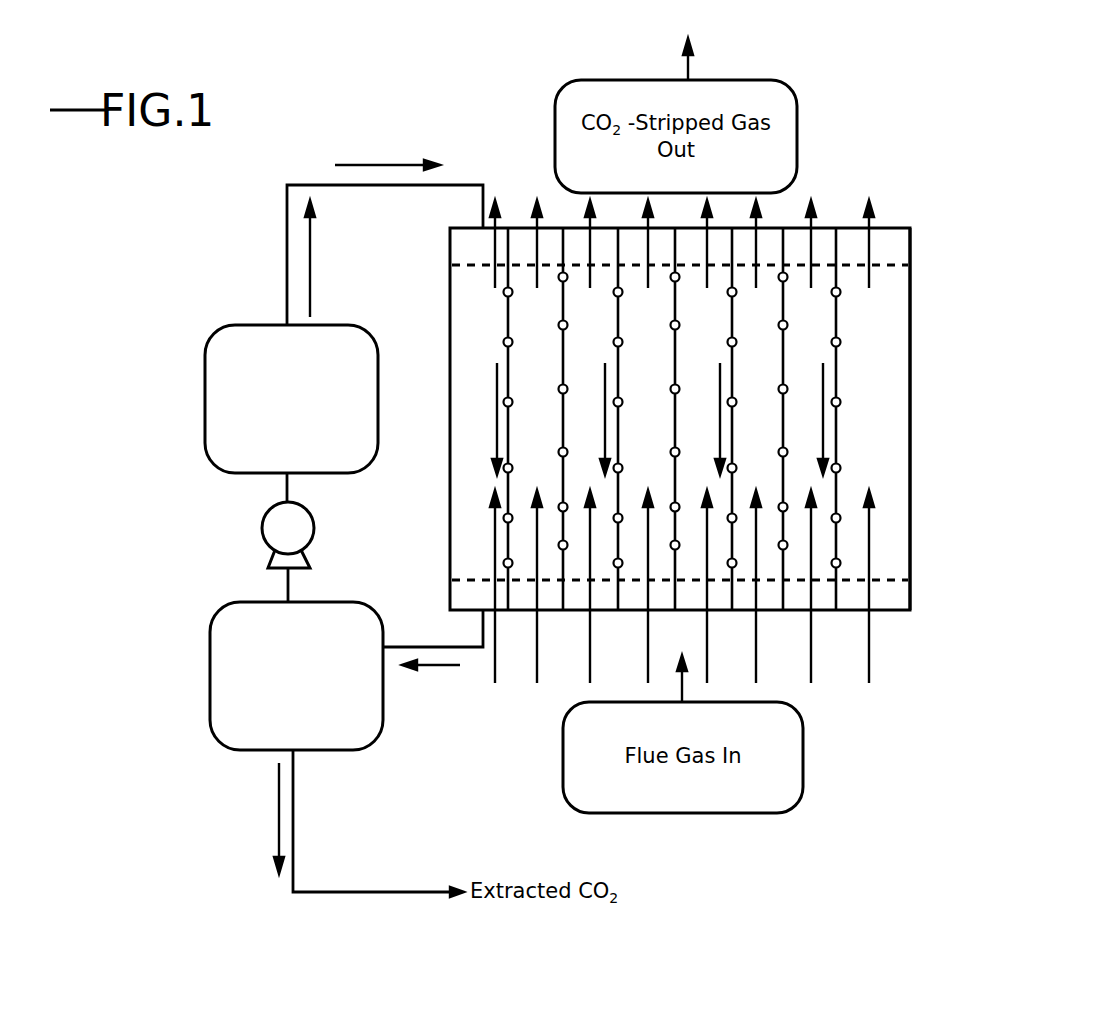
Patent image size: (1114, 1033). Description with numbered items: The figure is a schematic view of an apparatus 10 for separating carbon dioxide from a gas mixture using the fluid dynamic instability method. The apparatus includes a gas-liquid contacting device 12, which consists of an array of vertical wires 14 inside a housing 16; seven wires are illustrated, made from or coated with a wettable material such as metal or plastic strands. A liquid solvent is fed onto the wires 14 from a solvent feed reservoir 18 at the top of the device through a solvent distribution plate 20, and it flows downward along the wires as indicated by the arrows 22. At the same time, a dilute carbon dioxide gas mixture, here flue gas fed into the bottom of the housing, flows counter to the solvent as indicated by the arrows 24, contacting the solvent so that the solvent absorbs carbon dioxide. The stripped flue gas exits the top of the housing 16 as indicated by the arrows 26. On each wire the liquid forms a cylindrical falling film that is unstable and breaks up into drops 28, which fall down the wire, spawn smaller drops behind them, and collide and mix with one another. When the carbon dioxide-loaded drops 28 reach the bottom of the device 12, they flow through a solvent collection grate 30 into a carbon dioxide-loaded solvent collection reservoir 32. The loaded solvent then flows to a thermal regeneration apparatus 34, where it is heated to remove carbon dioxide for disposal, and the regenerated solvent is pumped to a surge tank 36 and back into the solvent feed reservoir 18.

The apparatus 10 is at (1020, 149).
The gas-liquid contacting device 12 is at (935, 374).
The vertical wires 14 is at (783, 345).
The housing 16 is at (912, 480).
The solvent feed reservoir 18 is at (883, 237).
The solvent distribution plate 20 is at (912, 233).
The arrows indicating liquid solvent flow 22 is at (718, 388).
The arrows indicating gas mixture flow 24 is at (813, 665).
The arrows indicating CO2-stripped flue gas exit 26 is at (763, 228).
The drops 28 is at (618, 403).
The solvent collection grate 30 is at (895, 572).
The CO2-loaded solvent collection reservoir 32 is at (895, 590).
The thermal regeneration apparatus 34 is at (210, 695).
The surge tank 36 is at (205, 418).